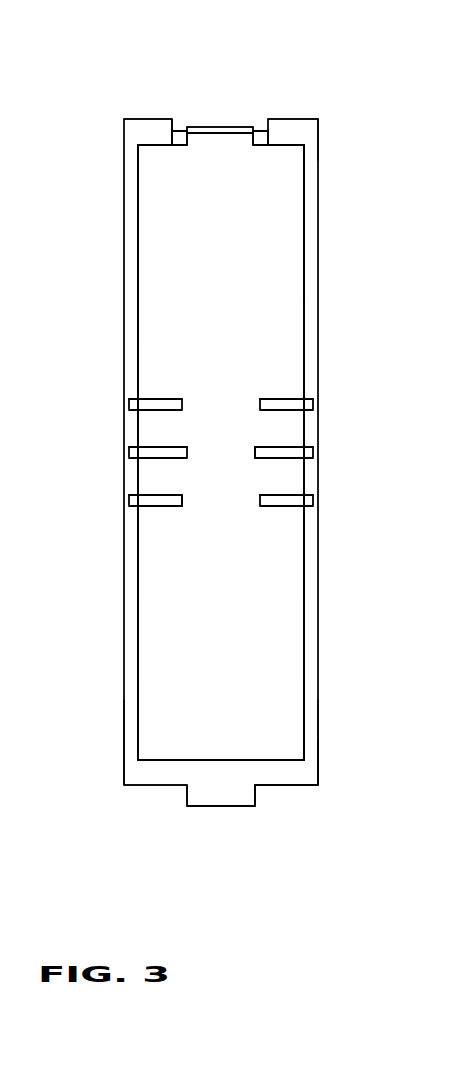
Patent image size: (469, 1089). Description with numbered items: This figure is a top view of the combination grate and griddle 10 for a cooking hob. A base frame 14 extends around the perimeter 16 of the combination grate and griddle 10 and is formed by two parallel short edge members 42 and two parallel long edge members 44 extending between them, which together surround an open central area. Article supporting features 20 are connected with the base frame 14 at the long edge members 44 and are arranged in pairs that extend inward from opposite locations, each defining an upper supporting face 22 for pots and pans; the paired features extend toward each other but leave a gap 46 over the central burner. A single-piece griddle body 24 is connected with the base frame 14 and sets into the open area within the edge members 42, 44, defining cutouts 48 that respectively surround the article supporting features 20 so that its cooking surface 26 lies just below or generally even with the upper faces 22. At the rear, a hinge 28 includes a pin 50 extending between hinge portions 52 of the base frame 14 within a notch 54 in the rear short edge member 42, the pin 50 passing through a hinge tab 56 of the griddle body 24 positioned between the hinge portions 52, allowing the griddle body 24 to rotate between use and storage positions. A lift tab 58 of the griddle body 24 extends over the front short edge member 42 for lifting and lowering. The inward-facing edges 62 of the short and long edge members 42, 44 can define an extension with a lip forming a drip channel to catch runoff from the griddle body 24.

The combination grate and griddle 10 is at (370, 113).
The base frame 14 is at (317, 258).
The perimeter 16 is at (318, 690).
The article supporting feature 20 is at (163, 392).
The upper supporting face 22 is at (155, 400).
The griddle body 24 is at (182, 713).
The cooking surface 26 is at (212, 220).
The hinge 28 is at (170, 135).
The short edge member 42 is at (303, 130).
The long edge member 44 is at (130, 707).
The gap 46 is at (230, 505).
The cutout 48 is at (170, 507).
The pin 50 is at (179, 130).
The hinge portion 52 is at (172, 133).
The notch 54 is at (255, 120).
The hinge tab 56 is at (222, 138).
The lift tab 58 is at (222, 797).
The inward-facing edge 62 is at (138, 325).